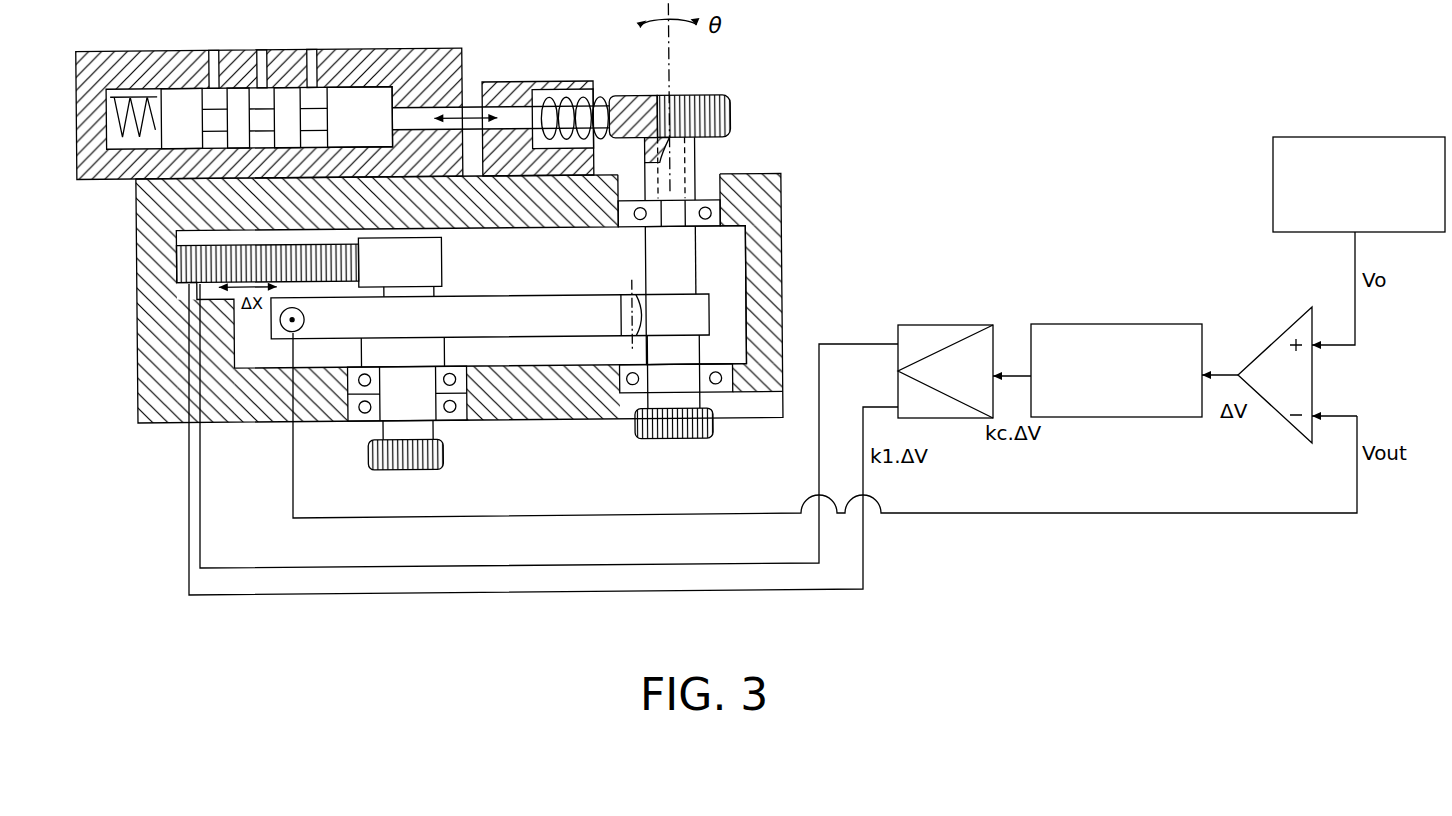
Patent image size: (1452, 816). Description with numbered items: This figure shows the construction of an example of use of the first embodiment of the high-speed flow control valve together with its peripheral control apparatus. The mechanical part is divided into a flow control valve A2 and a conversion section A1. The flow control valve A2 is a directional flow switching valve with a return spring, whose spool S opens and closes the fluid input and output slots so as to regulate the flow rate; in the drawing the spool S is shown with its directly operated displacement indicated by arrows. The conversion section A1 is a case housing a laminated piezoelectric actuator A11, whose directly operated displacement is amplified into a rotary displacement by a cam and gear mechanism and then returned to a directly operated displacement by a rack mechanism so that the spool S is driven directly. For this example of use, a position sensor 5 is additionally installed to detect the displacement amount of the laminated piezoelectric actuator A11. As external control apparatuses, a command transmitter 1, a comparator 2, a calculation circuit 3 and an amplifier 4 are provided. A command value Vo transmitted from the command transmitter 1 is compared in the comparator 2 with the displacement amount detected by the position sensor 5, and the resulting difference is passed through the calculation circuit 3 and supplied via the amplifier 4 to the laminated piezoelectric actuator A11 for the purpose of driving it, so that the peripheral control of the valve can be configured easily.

The command transmitter 1 is at (1289, 137).
The comparator 2 is at (1278, 345).
The calculation circuit 3 is at (1087, 324).
The amplifier 4 is at (964, 325).
The position sensor 5 is at (306, 320).
The conversion section A1 is at (135, 402).
The flow control valve A2 is at (374, 52).
The laminated piezoelectric actuator A11 is at (443, 271).
The valve spool S is at (470, 111).